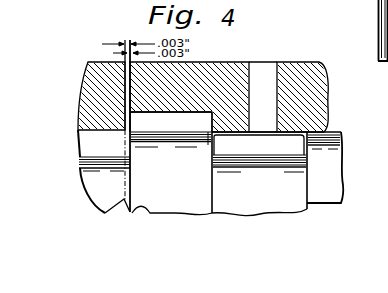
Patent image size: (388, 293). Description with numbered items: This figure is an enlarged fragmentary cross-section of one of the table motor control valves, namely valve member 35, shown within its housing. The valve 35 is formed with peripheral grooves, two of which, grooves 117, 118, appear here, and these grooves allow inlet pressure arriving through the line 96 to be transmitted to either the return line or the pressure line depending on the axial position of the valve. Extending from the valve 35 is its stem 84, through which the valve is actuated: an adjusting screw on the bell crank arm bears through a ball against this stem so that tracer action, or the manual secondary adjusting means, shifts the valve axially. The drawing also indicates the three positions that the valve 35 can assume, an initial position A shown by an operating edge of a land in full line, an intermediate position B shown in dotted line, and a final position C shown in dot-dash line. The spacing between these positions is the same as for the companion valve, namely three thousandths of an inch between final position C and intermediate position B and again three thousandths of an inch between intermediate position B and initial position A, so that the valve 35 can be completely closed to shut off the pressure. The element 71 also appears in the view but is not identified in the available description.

The valve member 35 is at (182, 152).
The inlet pressure line 96 is at (262, 85).
The rod 71 is at (378, 6).
The groove 117 is at (103, 158).
The groove 118 is at (268, 148).
The stem 84 is at (323, 179).
The initial position A is at (139, 208).
The intermediate position B is at (127, 203).
The final position C is at (120, 203).